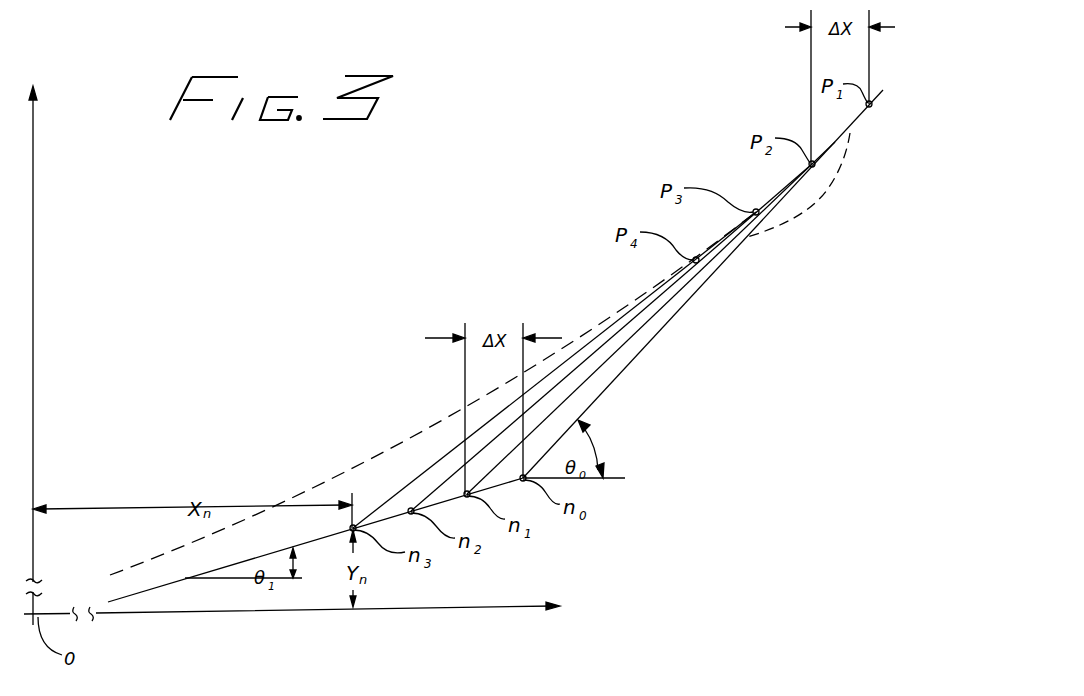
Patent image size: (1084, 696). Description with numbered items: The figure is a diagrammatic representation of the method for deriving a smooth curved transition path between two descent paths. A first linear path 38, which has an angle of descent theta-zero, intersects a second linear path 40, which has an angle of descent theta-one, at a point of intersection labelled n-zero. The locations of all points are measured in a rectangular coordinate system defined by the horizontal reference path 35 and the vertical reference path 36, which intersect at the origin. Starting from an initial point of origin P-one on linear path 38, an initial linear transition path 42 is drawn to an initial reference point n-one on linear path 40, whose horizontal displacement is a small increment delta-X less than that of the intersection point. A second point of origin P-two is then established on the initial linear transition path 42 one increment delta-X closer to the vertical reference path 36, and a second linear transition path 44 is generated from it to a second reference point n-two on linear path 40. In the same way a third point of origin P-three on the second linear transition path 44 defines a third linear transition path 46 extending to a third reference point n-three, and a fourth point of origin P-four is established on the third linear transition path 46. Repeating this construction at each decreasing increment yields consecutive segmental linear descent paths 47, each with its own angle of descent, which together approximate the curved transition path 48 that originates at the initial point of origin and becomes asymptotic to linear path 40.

The horizontal reference path 35 is at (280, 615).
The vertical reference path 36 is at (33, 325).
The first linear path 38 is at (742, 243).
The second linear path 40 is at (313, 537).
The initial linear transition path 42 is at (677, 302).
The second linear transition path 44 is at (628, 335).
The third linear transition path 46 is at (625, 370).
The segmental linear descent paths 47 is at (790, 191).
The curved transition path 48 is at (435, 415).